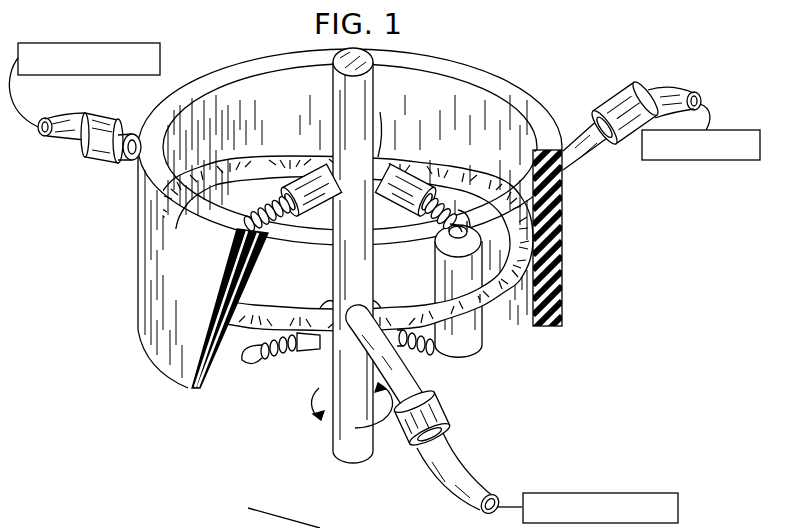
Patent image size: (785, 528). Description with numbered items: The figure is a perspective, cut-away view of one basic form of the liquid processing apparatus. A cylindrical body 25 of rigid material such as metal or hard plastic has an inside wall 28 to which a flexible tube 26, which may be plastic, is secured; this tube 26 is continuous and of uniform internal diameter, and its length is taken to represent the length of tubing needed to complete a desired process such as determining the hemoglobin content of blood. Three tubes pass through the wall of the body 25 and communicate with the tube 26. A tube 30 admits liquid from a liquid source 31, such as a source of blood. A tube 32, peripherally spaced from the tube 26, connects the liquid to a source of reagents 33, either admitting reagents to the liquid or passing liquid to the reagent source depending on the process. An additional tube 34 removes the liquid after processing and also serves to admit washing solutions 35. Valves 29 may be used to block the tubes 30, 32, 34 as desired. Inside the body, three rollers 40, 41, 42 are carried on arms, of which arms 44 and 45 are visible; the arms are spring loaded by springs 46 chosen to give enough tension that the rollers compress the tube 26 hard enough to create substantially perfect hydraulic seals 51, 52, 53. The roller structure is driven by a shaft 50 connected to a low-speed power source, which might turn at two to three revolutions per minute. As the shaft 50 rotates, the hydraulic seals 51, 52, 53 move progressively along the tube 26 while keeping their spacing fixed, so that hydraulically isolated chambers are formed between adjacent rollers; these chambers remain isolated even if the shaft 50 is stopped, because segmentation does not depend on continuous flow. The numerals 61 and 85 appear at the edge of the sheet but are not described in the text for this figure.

The cylindrical body 25 is at (562, 279).
The flexible tube 26 is at (494, 292).
The inside wall 28 is at (497, 108).
The valves 29 is at (442, 413).
The tube 30 is at (132, 152).
The liquid source 31 is at (160, 68).
The tube 32 is at (421, 383).
The source of reagents 33 is at (680, 514).
The tube 34 is at (590, 153).
The washing solutions 35 is at (664, 161).
The roller 40 is at (375, 113).
The roller 41 is at (341, 260).
The roller 42 is at (447, 266).
The arm 44 is at (311, 210).
The arm 45 is at (397, 223).
The springs 46 is at (430, 210).
The shaft 50 is at (372, 62).
The hydraulic seal 51 is at (378, 157).
The hydraulic seal 52 is at (222, 358).
The hydraulic seal 53 is at (480, 300).
The element 61 is at (150, 527).
The element 85 is at (185, 520).